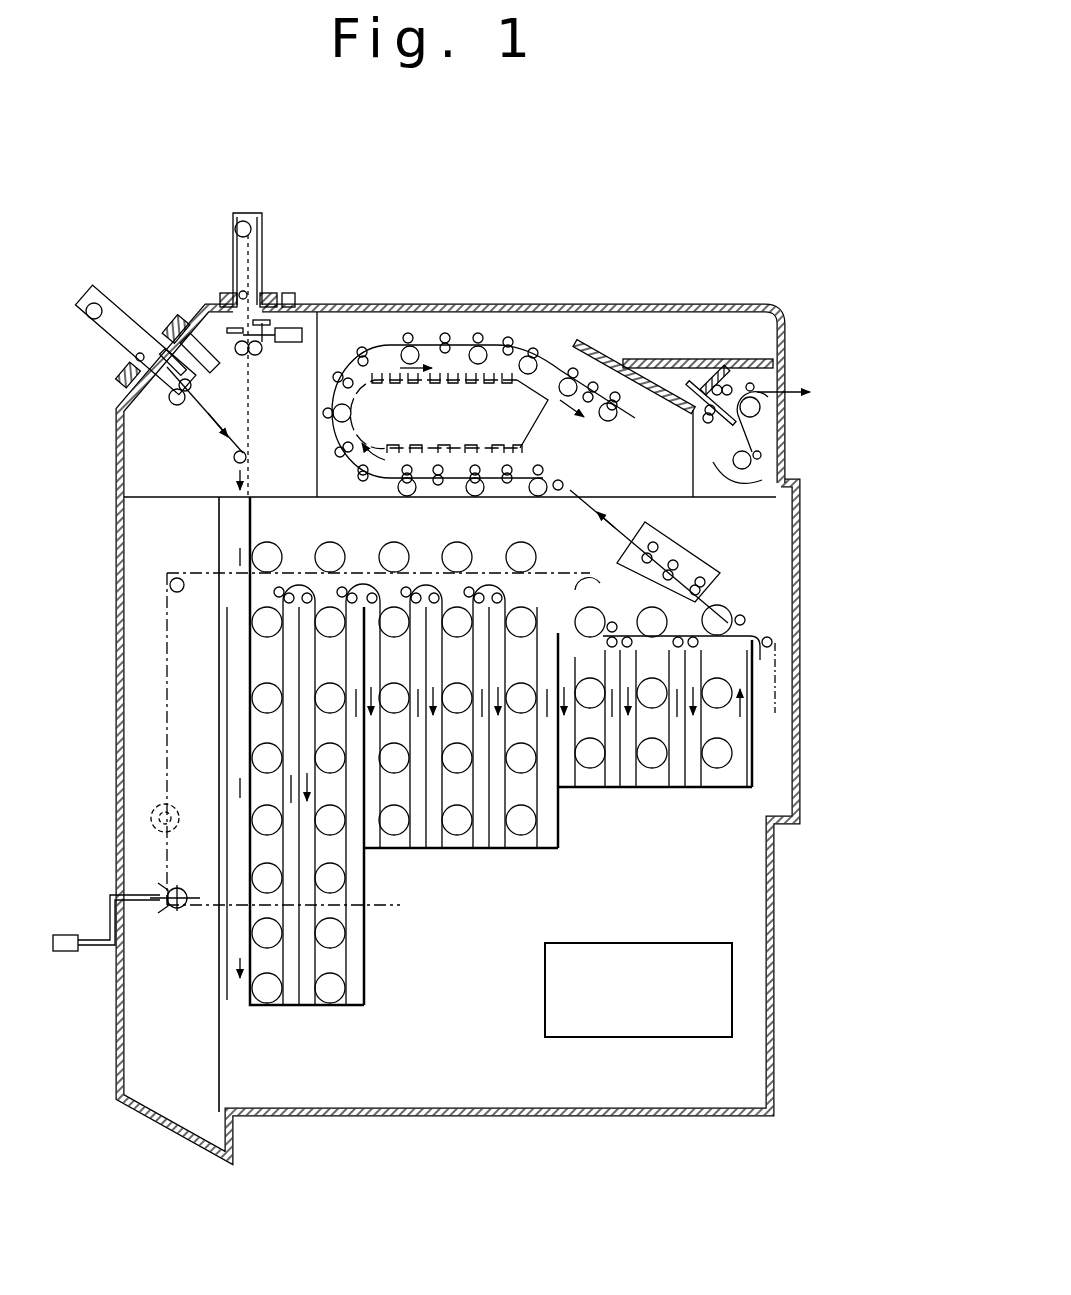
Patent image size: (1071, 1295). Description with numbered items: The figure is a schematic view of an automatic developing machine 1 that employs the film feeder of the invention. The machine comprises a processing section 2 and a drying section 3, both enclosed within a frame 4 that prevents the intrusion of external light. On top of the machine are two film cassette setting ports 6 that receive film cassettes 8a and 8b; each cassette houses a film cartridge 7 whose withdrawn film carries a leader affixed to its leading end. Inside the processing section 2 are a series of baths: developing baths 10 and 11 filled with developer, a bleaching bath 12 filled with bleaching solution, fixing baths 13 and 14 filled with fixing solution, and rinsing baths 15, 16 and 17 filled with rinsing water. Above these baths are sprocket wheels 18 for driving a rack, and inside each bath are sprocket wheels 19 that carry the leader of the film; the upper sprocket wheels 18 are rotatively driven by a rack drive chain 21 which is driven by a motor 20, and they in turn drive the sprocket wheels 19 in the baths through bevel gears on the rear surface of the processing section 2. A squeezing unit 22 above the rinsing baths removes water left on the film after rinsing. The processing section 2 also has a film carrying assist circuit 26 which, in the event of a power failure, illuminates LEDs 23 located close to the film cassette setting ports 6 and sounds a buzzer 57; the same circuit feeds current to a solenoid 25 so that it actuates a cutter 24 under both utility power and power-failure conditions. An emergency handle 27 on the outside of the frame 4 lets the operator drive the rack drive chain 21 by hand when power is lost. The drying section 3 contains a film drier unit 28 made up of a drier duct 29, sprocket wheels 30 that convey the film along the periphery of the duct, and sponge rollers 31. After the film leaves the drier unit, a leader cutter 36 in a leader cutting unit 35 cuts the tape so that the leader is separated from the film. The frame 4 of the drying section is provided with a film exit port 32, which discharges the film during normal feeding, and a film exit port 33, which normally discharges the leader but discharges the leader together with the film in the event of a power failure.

The automatic developing machine 1 is at (590, 217).
The processing section 2 is at (808, 652).
The drying section 3 is at (752, 290).
The frame 4 is at (800, 690).
The film cassette setting port 6 is at (270, 292).
The film cartridge 7 is at (233, 235).
The film cassette 8a is at (253, 214).
The film cassette 8b is at (85, 300).
The developing bath 10 is at (292, 1010).
The developing bath 11 is at (352, 1010).
The bleaching bath 12 is at (417, 853).
The fixing bath 13 is at (479, 853).
The fixing bath 14 is at (547, 853).
The rinsing bath 15 is at (603, 777).
The rinsing bath 16 is at (662, 777).
The rinsing bath 17 is at (733, 777).
The sprocket wheel 18 is at (270, 552).
The sprocket wheel 19 is at (262, 626).
The motor 20 is at (150, 822).
The rack drive chain 21 is at (165, 730).
The squeezing unit 22 is at (693, 562).
The LED 23 is at (175, 322).
The cutter 24 is at (167, 392).
The solenoid 25 is at (203, 367).
The film carrying assist circuit 26 is at (630, 942).
The emergency handle 27 is at (63, 955).
The film drier unit 28 is at (590, 336).
The drier duct 29 is at (436, 398).
The sprocket wheel 30 is at (400, 350).
The sponge roller 31 is at (408, 333).
The film exit port 32 is at (790, 390).
The film exit port 33 is at (697, 385).
The leader cutting unit 35 is at (763, 430).
The leader cutter 36 is at (755, 482).
The buzzer 57 is at (545, 992).